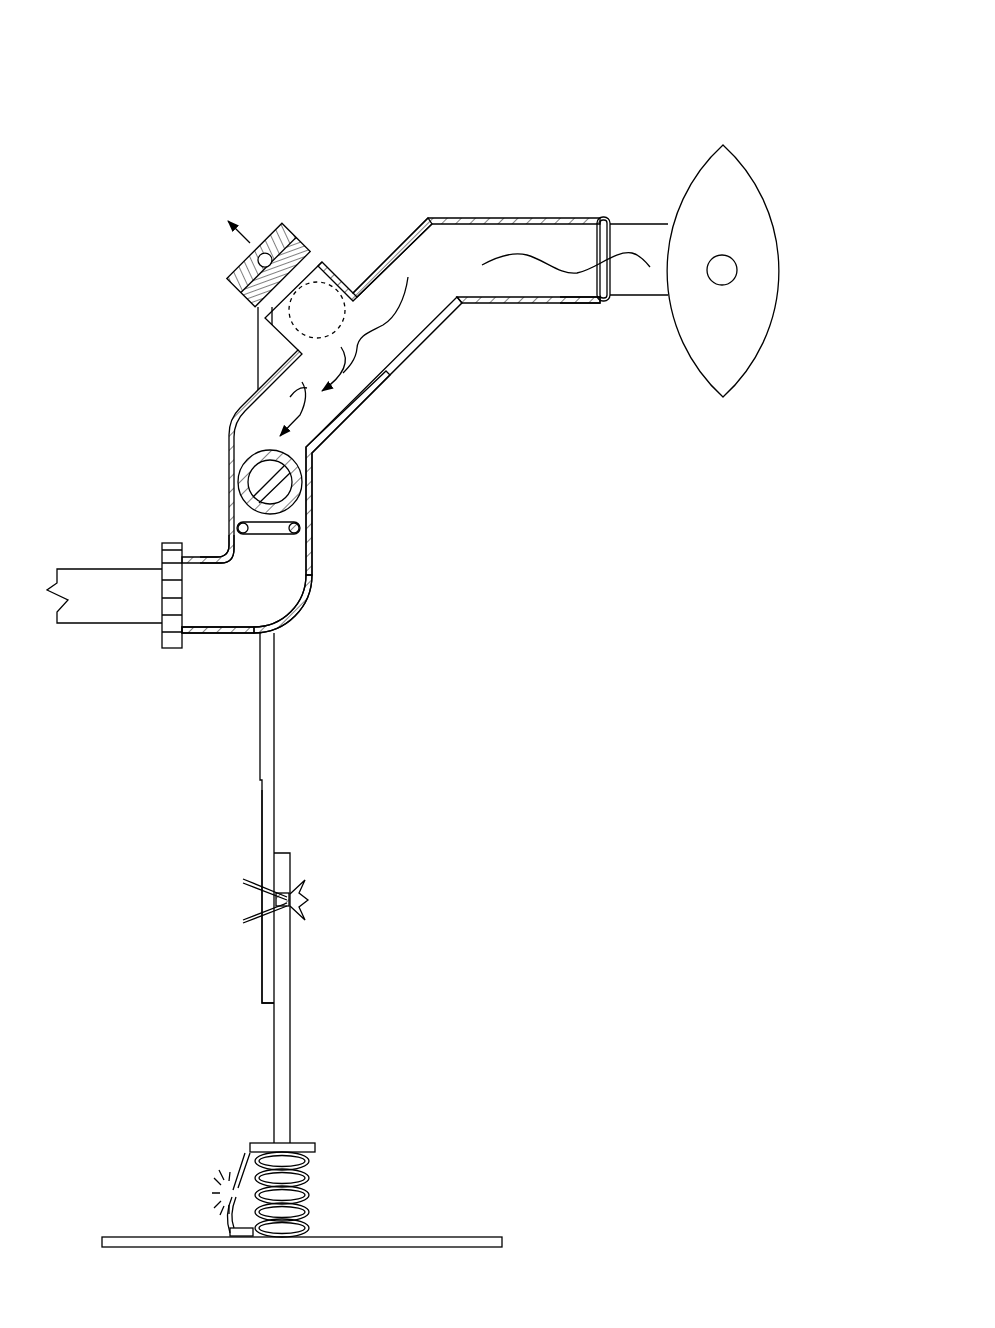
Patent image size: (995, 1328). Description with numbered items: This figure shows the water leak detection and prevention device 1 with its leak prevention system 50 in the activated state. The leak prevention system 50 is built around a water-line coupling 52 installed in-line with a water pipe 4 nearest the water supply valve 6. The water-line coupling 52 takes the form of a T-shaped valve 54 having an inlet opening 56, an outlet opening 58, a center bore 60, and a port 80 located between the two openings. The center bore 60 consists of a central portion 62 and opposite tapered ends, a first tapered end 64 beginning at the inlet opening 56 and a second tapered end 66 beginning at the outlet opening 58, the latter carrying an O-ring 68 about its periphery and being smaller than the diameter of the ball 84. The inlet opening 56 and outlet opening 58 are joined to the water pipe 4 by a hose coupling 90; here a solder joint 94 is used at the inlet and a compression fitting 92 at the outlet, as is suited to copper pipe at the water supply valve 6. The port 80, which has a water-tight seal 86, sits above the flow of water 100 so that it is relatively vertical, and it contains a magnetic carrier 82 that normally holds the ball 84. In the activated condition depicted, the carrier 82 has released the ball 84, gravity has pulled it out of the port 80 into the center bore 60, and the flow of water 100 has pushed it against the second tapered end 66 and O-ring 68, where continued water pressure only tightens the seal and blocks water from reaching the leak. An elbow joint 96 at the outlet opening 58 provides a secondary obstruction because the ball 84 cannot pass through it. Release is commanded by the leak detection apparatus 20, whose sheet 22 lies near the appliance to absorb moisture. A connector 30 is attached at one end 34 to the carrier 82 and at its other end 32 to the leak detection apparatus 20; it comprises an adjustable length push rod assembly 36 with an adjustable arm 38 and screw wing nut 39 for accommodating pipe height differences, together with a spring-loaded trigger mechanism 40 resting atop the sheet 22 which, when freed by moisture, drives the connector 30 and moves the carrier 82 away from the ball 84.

The water leak detection and prevention device 1 is at (62, 104).
The water pipe 4 is at (660, 237).
The water supply valve 6 is at (740, 193).
The leak detection apparatus 20 is at (245, 888).
The sheet 22 is at (468, 1237).
The connector 30 is at (258, 352).
The end of connector 32 is at (292, 1128).
The opposite end of connector 34 is at (258, 315).
The adjustable length push rod assembly 36 is at (268, 745).
The adjustable arm 38 is at (268, 818).
The screw wing nut 39 is at (305, 893).
The spring-loaded trigger mechanism 40 is at (312, 1144).
The leak prevention system 50 is at (480, 92).
The water-line coupling 52 is at (425, 218).
The T-shaped valve 54 is at (393, 250).
The inlet opening 56 is at (563, 290).
The outlet opening 58 is at (203, 577).
The center bore 60 is at (355, 385).
The central portion 62 is at (393, 342).
The first tapered end 64 is at (593, 292).
The second tapered end 66 is at (228, 568).
The O-ring 68 is at (300, 530).
The port 80 is at (318, 290).
The carrier 82 is at (303, 243).
The ball 84 is at (243, 478).
The water-tight seal 86 is at (265, 224).
The hose coupling 90 is at (602, 228).
The compression fitting 92 is at (168, 645).
The solder joint 94 is at (609, 230).
The elbow joint 96 is at (282, 597).
The flow of water 100 is at (483, 266).